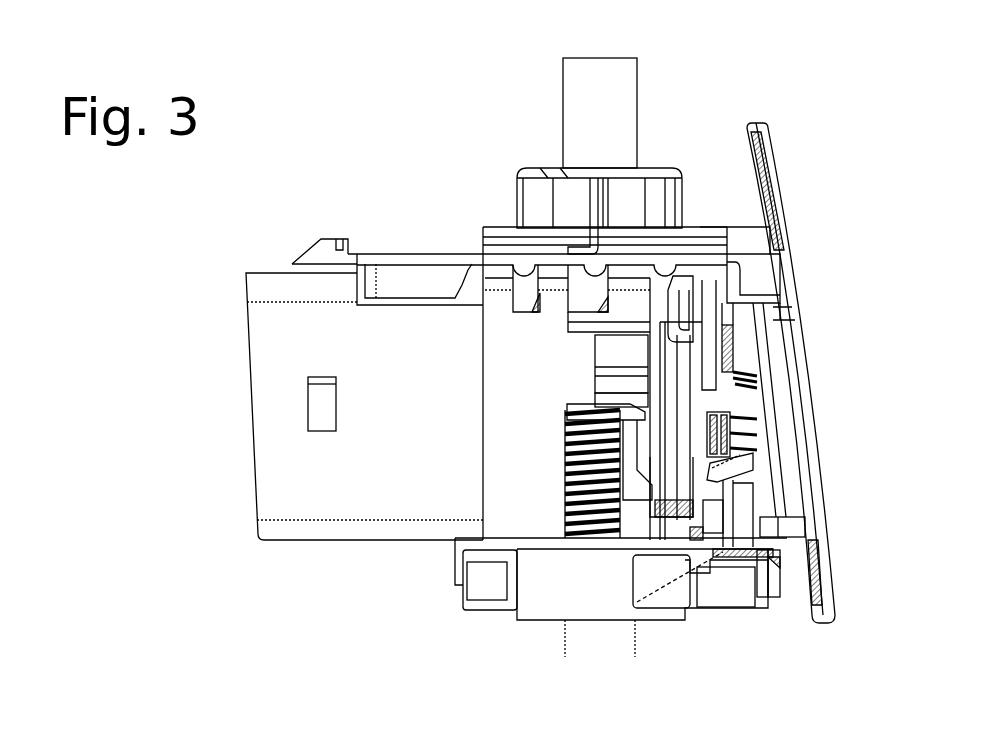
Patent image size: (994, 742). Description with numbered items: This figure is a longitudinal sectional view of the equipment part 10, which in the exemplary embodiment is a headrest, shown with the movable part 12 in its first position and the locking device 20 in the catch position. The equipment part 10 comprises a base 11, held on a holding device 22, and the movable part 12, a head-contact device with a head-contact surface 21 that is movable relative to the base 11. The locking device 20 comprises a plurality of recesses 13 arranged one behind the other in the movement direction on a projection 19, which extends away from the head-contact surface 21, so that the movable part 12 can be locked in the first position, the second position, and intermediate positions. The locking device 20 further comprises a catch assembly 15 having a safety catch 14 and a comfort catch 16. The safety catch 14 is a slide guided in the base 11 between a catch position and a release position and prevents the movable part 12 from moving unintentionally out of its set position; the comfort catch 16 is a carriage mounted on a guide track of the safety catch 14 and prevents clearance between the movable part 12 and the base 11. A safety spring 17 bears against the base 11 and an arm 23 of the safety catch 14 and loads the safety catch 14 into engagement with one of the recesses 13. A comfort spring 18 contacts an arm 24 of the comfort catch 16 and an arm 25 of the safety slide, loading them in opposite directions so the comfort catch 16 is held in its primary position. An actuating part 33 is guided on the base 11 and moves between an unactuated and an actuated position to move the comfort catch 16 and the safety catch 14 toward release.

The equipment part 10 is at (415, 135).
The base 11 is at (557, 598).
The movable part 12 is at (777, 243).
The recesses 13 is at (493, 308).
The safety catch 14 is at (710, 302).
The catch assembly 15 is at (733, 372).
The comfort catch 16 is at (687, 303).
The safety spring 17 is at (567, 482).
The comfort spring 18 is at (737, 432).
The projection 19 is at (408, 280).
The locking device 20 is at (508, 384).
The head-contact surface 21 is at (798, 315).
The holding device 22 is at (610, 100).
The arm 23 is at (575, 407).
The arm 24 is at (727, 403).
The arm 25 is at (740, 472).
The actuating part 33 is at (480, 590).